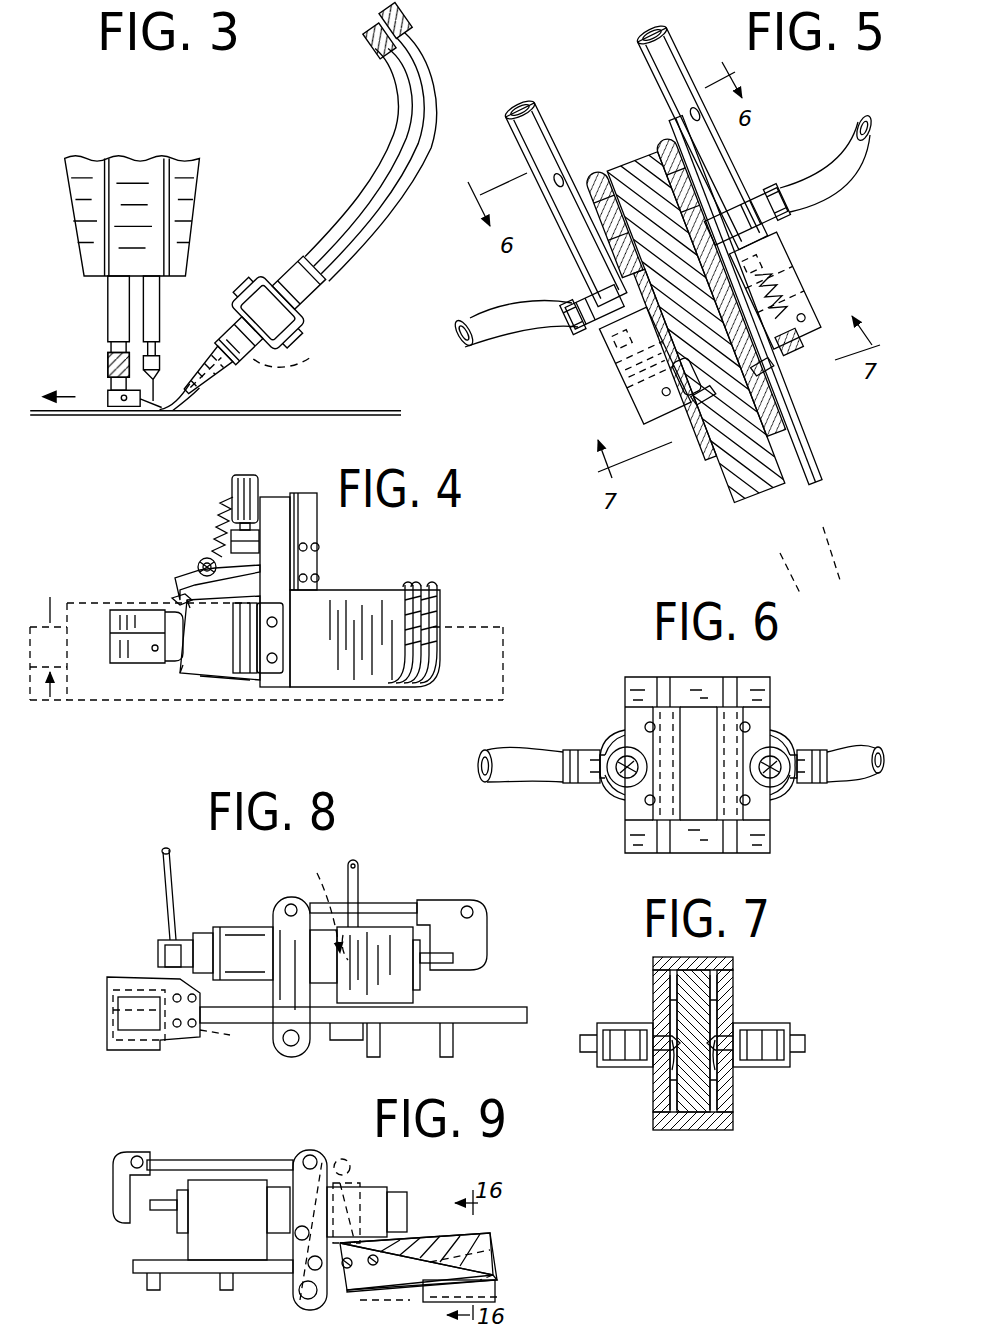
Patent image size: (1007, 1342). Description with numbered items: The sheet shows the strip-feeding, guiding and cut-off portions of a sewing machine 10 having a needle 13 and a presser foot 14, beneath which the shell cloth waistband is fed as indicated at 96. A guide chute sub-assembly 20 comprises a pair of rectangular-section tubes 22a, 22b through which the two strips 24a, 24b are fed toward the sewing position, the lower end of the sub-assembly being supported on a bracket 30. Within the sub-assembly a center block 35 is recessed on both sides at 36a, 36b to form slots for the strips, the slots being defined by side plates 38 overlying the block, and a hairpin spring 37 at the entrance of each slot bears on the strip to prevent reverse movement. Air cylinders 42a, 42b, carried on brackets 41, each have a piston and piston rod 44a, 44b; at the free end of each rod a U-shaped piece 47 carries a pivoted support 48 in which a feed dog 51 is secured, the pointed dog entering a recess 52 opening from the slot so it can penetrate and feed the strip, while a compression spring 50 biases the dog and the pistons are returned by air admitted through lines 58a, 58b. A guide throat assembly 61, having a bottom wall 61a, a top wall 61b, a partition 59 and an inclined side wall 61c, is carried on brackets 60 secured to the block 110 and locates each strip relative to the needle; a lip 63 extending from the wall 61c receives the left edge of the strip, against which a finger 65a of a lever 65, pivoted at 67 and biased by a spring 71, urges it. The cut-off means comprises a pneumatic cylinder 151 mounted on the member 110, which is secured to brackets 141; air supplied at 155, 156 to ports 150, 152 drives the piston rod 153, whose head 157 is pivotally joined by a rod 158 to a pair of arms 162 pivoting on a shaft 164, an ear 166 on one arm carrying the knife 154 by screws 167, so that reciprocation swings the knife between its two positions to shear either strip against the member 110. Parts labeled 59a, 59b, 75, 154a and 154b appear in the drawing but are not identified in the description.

In FIG. 3, the sewing machine 10 is at (87, 132).
In FIG. 3, the needle 13 is at (150, 362).
In FIG. 3, the presser foot 14 is at (126, 378).
In FIG. 4, the presser foot 14 is at (157, 665).
In FIG. 3, the guide chute sub-assembly 20 is at (362, 105).
In FIG. 3, the tube 22a is at (360, 178).
In FIG. 4, the tube 22a is at (412, 583).
In FIG. 3, the tube 22b is at (357, 205).
In FIG. 4, the tube 22b is at (433, 585).
In FIG. 3, the strip 24a is at (345, 42).
In FIG. 5, the strip 24a is at (592, 115).
In FIG. 3, the strip 24b is at (376, 23).
In FIG. 5, the strip 24b is at (613, 85).
In FIG. 3, the bracket 30 is at (278, 252).
In FIG. 4, the bracket 30 is at (328, 557).
In FIG. 5, the center block 35 is at (632, 147).
In FIG. 6, the center block 35 is at (710, 770).
In FIG. 7, the center block 35 is at (693, 1041).
In FIG. 5, the recess 36a is at (605, 265).
In FIG. 6, the recess 36a is at (673, 723).
In FIG. 7, the recess 36a is at (670, 987).
In FIG. 5, the recess 36b is at (705, 203).
In FIG. 6, the recess 36b is at (730, 713).
In FIG. 7, the recess 36b is at (737, 987).
In FIG. 5, the hairpin spring 37 is at (560, 180).
In FIG. 6, the hairpin spring 37 is at (640, 713).
In FIG. 5, the side plate 38 is at (600, 207).
In FIG. 6, the side plate 38 is at (667, 850).
In FIG. 7, the side plate 38 is at (657, 962).
In FIG. 5, the bracket 41 is at (590, 318).
In FIG. 6, the bracket 41 is at (623, 797).
In FIG. 5, the air cylinder 42a is at (548, 108).
In FIG. 6, the air cylinder 42a is at (610, 780).
In FIG. 5, the air cylinder 42b is at (660, 42).
In FIG. 6, the air cylinder 42b is at (773, 790).
In FIG. 5, the piston rod and piston 44a is at (602, 335).
In FIG. 6, the piston rod and piston 44a is at (617, 747).
In FIG. 5, the piston rod and piston 44b is at (772, 233).
In FIG. 6, the piston rod and piston 44b is at (780, 747).
In FIG. 5, the U-shaped piece 47 is at (612, 362).
In FIG. 7, the U-shaped piece 47 is at (615, 1022).
In FIG. 5, the support 48 is at (698, 425).
In FIG. 7, the support 48 is at (600, 1037).
In FIG. 5, the compression spring 50 is at (803, 306).
In FIG. 5, the feed dog 51 is at (703, 462).
In FIG. 7, the feed dog 51 is at (660, 1075).
In FIG. 5, the recess 52 is at (758, 482).
In FIG. 7, the recess 52 is at (667, 1100).
In FIG. 5, the air line 58a is at (522, 322).
In FIG. 6, the air line 58a is at (497, 757).
In FIG. 5, the air line 58b is at (845, 145).
In FIG. 6, the air line 58b is at (857, 747).
In FIG. 3, the partition 59 is at (299, 351).
In FIG. 5, the first hose fitting 59a is at (572, 296).
In FIG. 6, the first hose fitting 59a is at (573, 782).
In FIG. 5, the second hose fitting 59b is at (775, 188).
In FIG. 6, the second hose fitting 59b is at (813, 783).
In FIG. 3, the bracket 60 is at (243, 277).
In FIG. 4, the guide throat assembly 61 is at (200, 688).
In FIG. 3, the bottom wall 61a is at (215, 345).
In FIG. 3, the top wall 61b is at (207, 325).
In FIG. 4, the top wall 61b is at (228, 644).
In FIG. 3, the side wall 61c is at (185, 370).
In FIG. 4, the side wall 61c is at (237, 682).
In FIG. 4, the lip 63 is at (180, 673).
In FIG. 4, the lever 65 is at (193, 586).
In FIG. 4, the finger 65a is at (180, 600).
In FIG. 4, the pivot 67 is at (205, 560).
In FIG. 4, the spring 71 is at (213, 517).
In FIG. 4, the adjusting screw 75 is at (245, 480).
In FIG. 3, the shell cloth waistband 96 is at (312, 381).
In FIG. 4, the block 110 is at (277, 677).
In FIG. 8, the block 110 is at (473, 1007).
In FIG. 9, the block 110 is at (493, 1267).
In FIG. 8, the bracket 141 is at (447, 1057).
In FIG. 8, the port 150 is at (170, 953).
In FIG. 8, the pneumatic cylinder 151 is at (390, 980).
In FIG. 9, the pneumatic cylinder 151 is at (235, 1222).
In FIG. 8, the port 152 is at (314, 909).
In FIG. 8, the piston rod 153 is at (440, 983).
In FIG. 9, the piston rod 153 is at (160, 1213).
In FIG. 8, the knife 154 is at (123, 980).
In FIG. 9, the knife 154 is at (437, 1233).
In FIG. 9, the clamp block upper jaw 154a is at (477, 1230).
In FIG. 9, the clamp block lower jaw 154b is at (480, 1257).
In FIG. 8, the air supply 155 is at (160, 860).
In FIG. 8, the air supply 156 is at (355, 873).
In FIG. 8, the head 157 is at (478, 945).
In FIG. 9, the head 157 is at (127, 1203).
In FIG. 8, the rod 158 is at (370, 905).
In FIG. 9, the rod 158 is at (230, 1160).
In FIG. 8, the arm 162 is at (277, 923).
In FIG. 9, the arm 162 is at (322, 1155).
In FIG. 8, the shaft 164 is at (287, 1040).
In FIG. 9, the shaft 164 is at (296, 1292).
In FIG. 9, the ear 166 is at (347, 1237).
In FIG. 9, the screw 167 is at (347, 1272).